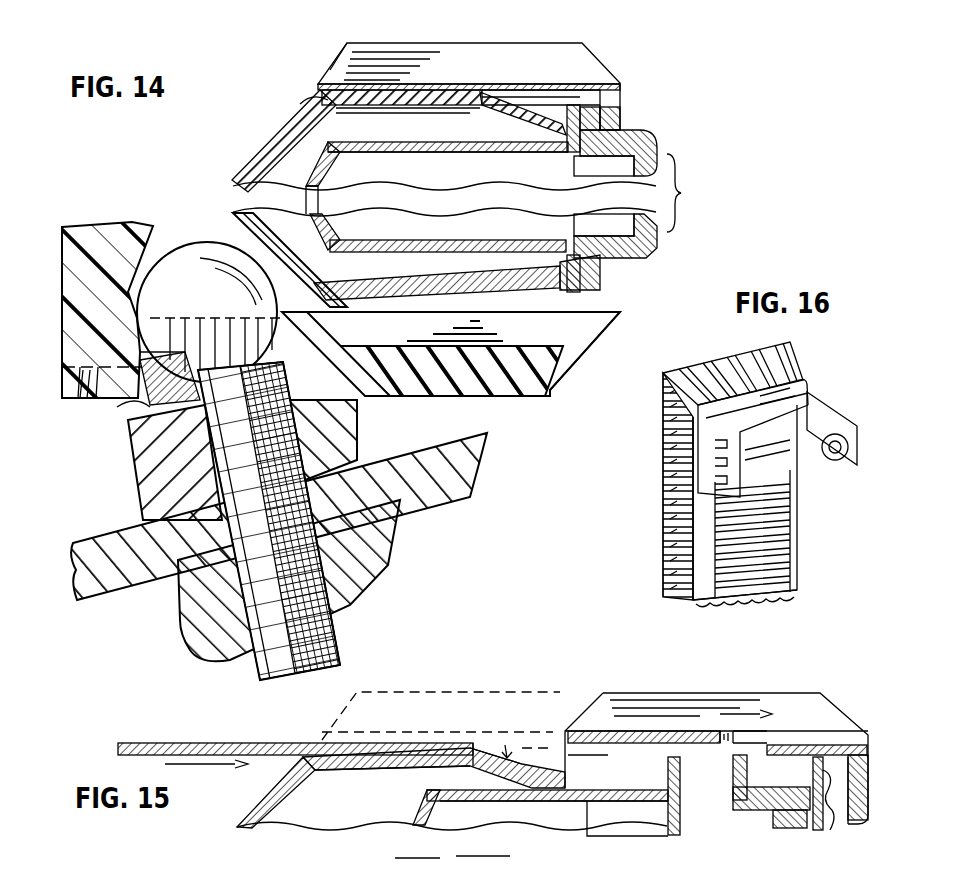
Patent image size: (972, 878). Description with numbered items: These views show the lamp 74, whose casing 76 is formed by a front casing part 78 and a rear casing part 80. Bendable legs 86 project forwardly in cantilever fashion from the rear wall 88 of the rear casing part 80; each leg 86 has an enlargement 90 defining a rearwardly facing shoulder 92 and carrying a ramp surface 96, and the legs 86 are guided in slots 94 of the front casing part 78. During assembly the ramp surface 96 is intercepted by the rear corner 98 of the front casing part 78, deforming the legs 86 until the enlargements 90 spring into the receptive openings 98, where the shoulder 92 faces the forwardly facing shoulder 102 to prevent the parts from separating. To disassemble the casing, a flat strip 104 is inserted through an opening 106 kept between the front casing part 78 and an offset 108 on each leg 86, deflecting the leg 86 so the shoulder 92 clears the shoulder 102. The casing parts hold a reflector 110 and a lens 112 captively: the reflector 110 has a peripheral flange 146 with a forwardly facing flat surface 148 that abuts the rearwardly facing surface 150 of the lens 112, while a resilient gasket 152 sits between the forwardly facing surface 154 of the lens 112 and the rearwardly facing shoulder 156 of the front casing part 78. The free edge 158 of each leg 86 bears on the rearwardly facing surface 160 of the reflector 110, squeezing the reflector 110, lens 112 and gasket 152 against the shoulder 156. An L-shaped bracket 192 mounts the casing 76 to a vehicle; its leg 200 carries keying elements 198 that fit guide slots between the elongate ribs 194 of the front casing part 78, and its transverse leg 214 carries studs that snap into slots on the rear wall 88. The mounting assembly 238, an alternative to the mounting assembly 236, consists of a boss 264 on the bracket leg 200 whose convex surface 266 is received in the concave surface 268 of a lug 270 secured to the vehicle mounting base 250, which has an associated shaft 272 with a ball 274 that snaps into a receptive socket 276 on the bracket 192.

In FIG. 16, the lamp 74 is at (653, 520).
In FIG. 14, the casing 76 is at (332, 70).
In FIG. 16, the casing 76 is at (663, 422).
In FIG. 14, the front casing part 78 is at (598, 60).
In FIG. 15, the front casing part 78 is at (815, 700).
In FIG. 16, the front casing part 78 is at (686, 368).
In FIG. 14, the rear casing part 80 is at (262, 150).
In FIG. 16, the rear casing part 80 is at (777, 388).
In FIG. 14, the bendable legs 86 is at (348, 72).
In FIG. 15, the bendable legs 86 is at (400, 745).
In FIG. 15, the rear wall 88 is at (262, 800).
In FIG. 14, the enlargement 90 is at (555, 100).
In FIG. 15, the enlargement 90 is at (532, 735).
In FIG. 14, the rearwardly facing shoulder 92 is at (470, 98).
In FIG. 15, the rearwardly facing shoulder 92 is at (468, 745).
In FIG. 15, the slots 94 is at (726, 738).
In FIG. 14, the ramp surface 96 is at (492, 100).
In FIG. 15, the ramp surface 96 is at (507, 745).
In FIG. 14, the receptive openings 98 is at (326, 98).
In FIG. 15, the receptive openings 98 is at (580, 731).
In FIG. 14, the forwardly facing shoulder 102 is at (480, 112).
In FIG. 15, the forwardly facing shoulder 102 is at (725, 738).
In FIG. 15, the flat strip 104 is at (178, 743).
In FIG. 14, the opening 106 is at (312, 104).
In FIG. 15, the opening 106 is at (306, 756).
In FIG. 14, the offset 108 is at (335, 118).
In FIG. 15, the offset 108 is at (334, 772).
In FIG. 15, the reflector 110 is at (611, 810).
In FIG. 15, the lens 112 is at (784, 816).
In FIG. 15, the peripheral flange 146 is at (688, 770).
In FIG. 15, the forwardly facing flat surface 148 is at (696, 775).
In FIG. 15, the rearwardly facing surface 150 is at (758, 803).
In FIG. 15, the resilient gasket 152 is at (838, 790).
In FIG. 15, the forwardly facing surface 154 is at (838, 740).
In FIG. 14, the rearwardly facing shoulder 156 is at (612, 136).
In FIG. 15, the rearwardly facing shoulder 156 is at (860, 800).
In FIG. 14, the free edge 158 is at (598, 120).
In FIG. 15, the free edge 158 is at (578, 801).
In FIG. 15, the rearwardly facing surface 160 is at (657, 803).
In FIG. 14, the L-shaped bracket 192 is at (495, 394).
In FIG. 16, the L-shaped bracket 192 is at (805, 470).
In FIG. 14, the ribs 194 is at (418, 43).
In FIG. 15, the ribs 194 is at (406, 868).
In FIG. 16, the ribs 194 is at (664, 463).
In FIG. 16, the keying elements 198 is at (665, 497).
In FIG. 14, the leg 200 is at (578, 360).
In FIG. 16, the leg 200 is at (765, 515).
In FIG. 16, the leg 214 is at (838, 410).
In FIG. 15, the mounting assembly 236 is at (481, 867).
In FIG. 14, the mounting assembly 238 is at (430, 531).
In FIG. 14, the vehicle mounting base 250 is at (128, 590).
In FIG. 14, the boss 264 is at (117, 407).
In FIG. 14, the convex surface 266 is at (128, 418).
In FIG. 14, the concave surface 268 is at (143, 445).
In FIG. 14, the lug 270 is at (345, 445).
In FIG. 14, the shaft 272 is at (380, 578).
In FIG. 14, the ball 274 is at (187, 256).
In FIG. 14, the socket block 276 is at (118, 240).
In FIG. 16, the socket block 276 is at (797, 458).